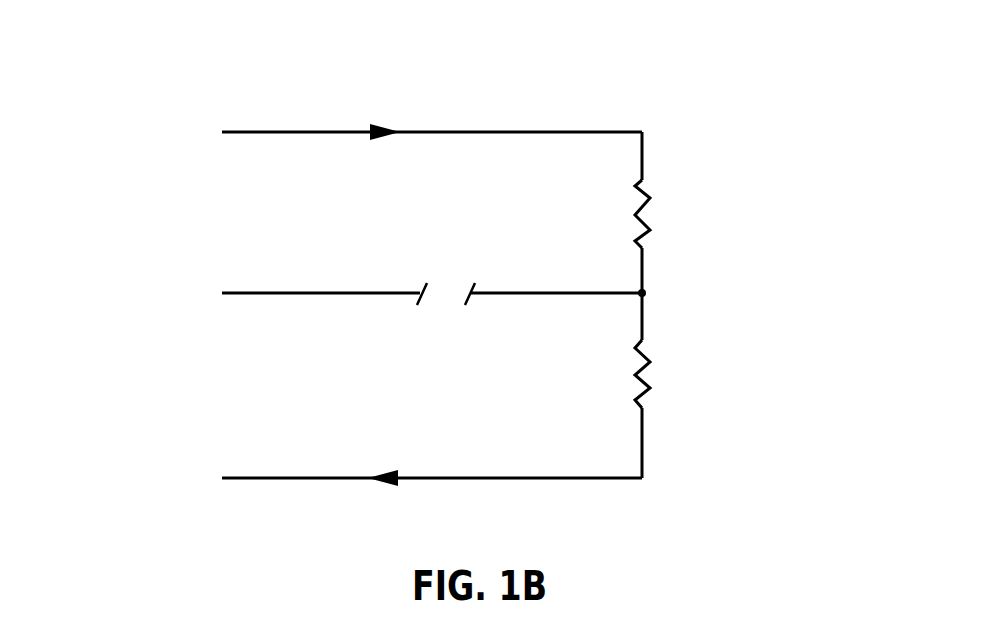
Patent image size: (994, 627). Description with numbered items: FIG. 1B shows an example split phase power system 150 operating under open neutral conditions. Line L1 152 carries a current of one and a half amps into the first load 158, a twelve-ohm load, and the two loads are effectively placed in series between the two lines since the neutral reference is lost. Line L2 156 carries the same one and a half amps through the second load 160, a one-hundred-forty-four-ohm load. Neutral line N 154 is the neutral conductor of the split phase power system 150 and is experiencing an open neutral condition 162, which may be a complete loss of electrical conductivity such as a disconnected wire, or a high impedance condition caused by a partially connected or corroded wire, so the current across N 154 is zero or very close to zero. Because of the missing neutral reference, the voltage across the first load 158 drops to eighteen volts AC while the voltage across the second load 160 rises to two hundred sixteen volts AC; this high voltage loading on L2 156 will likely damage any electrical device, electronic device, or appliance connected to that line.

The split phase power system 150 is at (472, 280).
The line L1 152 is at (355, 140).
The neutral line N 154 is at (355, 298).
The line L2 156 is at (355, 483).
The Load 1 158 is at (690, 224).
The Load 2 160 is at (696, 384).
The open neutral condition 162 is at (449, 296).